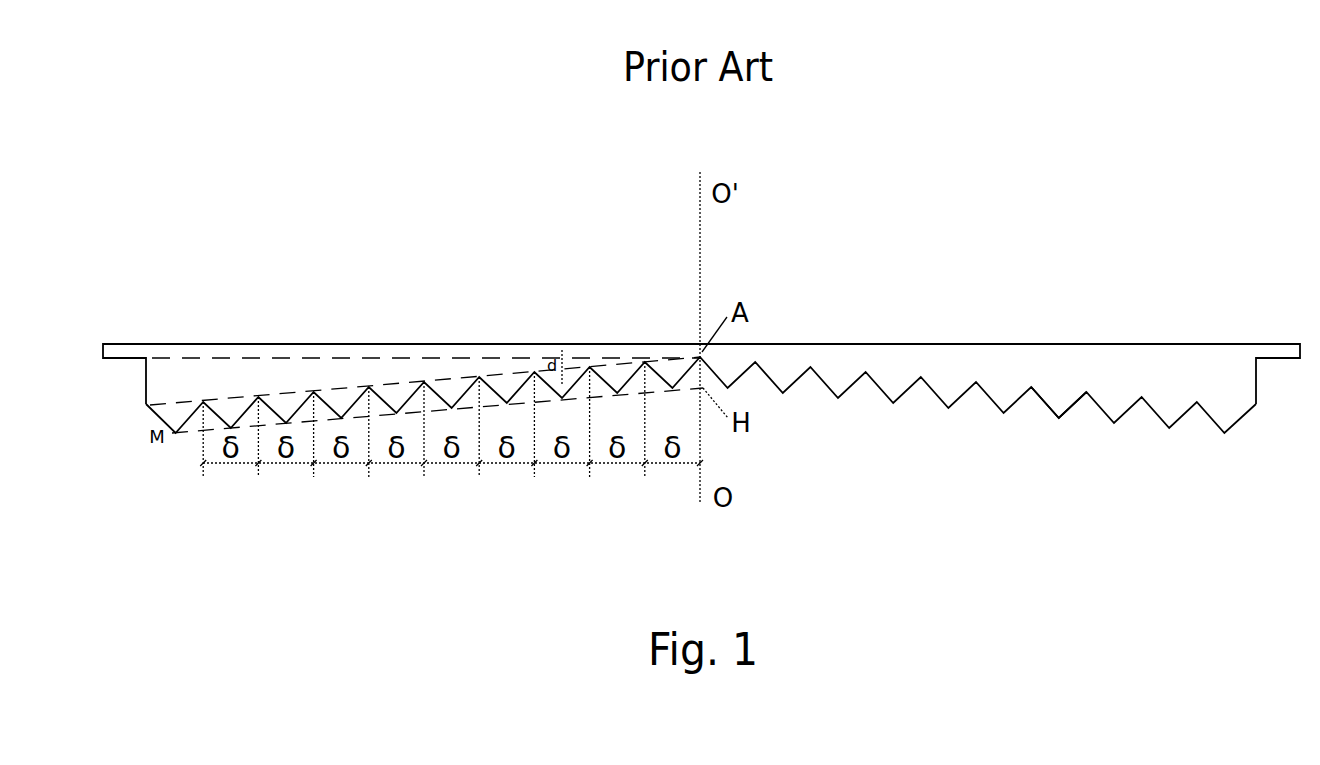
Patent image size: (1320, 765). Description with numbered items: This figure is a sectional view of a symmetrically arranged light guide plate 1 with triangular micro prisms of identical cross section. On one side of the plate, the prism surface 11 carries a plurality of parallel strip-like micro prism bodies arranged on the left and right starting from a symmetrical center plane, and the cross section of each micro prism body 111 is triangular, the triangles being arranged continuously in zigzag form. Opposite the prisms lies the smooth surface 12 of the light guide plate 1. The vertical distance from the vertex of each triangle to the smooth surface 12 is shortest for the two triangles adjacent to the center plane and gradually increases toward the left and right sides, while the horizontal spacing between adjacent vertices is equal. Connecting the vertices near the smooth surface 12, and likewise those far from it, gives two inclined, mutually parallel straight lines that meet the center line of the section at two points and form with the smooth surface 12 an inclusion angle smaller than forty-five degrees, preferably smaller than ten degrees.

The light guide plate 1 is at (1183, 360).
The prism surface 11 is at (1257, 407).
The micro prism body 111 is at (1063, 395).
The smooth surface 12 is at (796, 343).